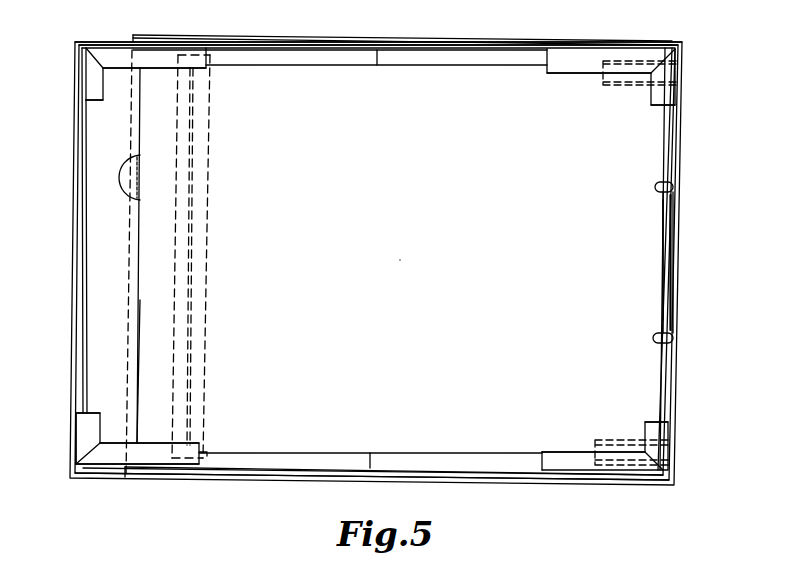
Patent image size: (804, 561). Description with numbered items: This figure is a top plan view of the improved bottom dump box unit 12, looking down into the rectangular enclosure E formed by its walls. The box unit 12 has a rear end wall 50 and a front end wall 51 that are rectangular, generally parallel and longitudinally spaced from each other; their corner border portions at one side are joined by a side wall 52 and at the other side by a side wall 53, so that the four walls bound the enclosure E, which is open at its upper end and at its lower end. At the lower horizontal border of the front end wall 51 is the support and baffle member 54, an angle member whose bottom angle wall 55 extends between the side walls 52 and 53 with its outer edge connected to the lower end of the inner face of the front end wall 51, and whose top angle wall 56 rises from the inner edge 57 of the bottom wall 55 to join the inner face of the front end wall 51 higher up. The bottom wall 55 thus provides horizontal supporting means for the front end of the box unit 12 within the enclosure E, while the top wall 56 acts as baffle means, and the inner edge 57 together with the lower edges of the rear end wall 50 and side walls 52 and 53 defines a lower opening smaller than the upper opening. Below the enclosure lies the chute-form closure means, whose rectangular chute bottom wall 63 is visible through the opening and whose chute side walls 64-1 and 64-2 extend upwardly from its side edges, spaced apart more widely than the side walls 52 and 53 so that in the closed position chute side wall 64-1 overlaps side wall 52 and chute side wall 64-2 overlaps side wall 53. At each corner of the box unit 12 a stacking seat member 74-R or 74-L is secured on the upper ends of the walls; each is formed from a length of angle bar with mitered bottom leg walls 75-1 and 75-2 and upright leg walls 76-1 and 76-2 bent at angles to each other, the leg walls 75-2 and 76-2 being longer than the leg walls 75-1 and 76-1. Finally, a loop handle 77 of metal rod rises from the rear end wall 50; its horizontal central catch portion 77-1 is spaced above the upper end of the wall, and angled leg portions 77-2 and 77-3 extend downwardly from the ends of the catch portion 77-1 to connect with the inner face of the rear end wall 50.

The bottom dump box unit 12 is at (682, 356).
The rear end wall 50 is at (676, 395).
The front end wall 51 is at (70, 362).
The side wall 52 is at (468, 470).
The side wall 53 is at (320, 62).
The support and baffle member 54 is at (148, 298).
The bottom angle wall 55 is at (128, 178).
The top angle wall 56 is at (118, 252).
The inner edge 57 is at (137, 364).
The chute bottom wall 63 is at (434, 321).
The chute side wall 64-1 is at (305, 480).
The chute side wall 64-2 is at (345, 40).
The stacking seat member 74-L is at (615, 48).
The stacking seat member 74-R is at (103, 45).
The bottom leg wall 75-1 is at (92, 96).
The bottom leg wall 75-2 is at (119, 63).
The upright leg wall 76-1 is at (74, 438).
The upright leg wall 76-2 is at (104, 473).
The loop handle 77 is at (676, 283).
The catch portion 77-1 is at (673, 232).
The leg portion 77-2 is at (653, 338).
The leg portion 77-3 is at (655, 187).
The rectangular enclosure E is at (268, 432).